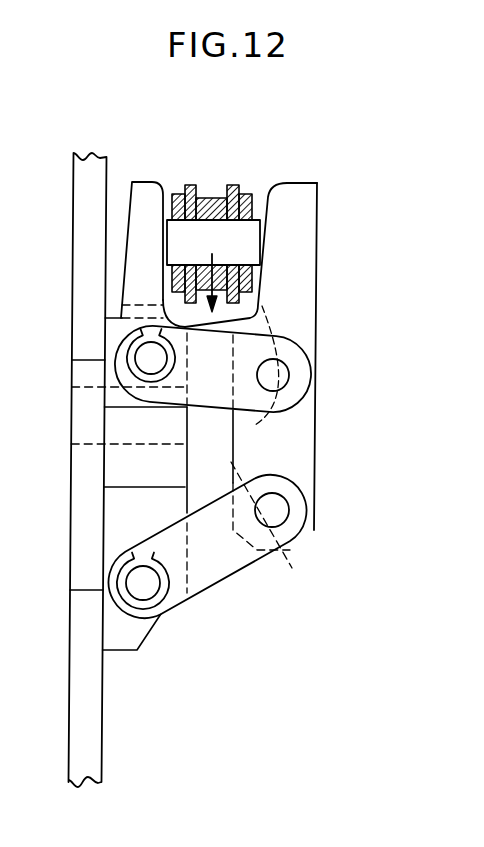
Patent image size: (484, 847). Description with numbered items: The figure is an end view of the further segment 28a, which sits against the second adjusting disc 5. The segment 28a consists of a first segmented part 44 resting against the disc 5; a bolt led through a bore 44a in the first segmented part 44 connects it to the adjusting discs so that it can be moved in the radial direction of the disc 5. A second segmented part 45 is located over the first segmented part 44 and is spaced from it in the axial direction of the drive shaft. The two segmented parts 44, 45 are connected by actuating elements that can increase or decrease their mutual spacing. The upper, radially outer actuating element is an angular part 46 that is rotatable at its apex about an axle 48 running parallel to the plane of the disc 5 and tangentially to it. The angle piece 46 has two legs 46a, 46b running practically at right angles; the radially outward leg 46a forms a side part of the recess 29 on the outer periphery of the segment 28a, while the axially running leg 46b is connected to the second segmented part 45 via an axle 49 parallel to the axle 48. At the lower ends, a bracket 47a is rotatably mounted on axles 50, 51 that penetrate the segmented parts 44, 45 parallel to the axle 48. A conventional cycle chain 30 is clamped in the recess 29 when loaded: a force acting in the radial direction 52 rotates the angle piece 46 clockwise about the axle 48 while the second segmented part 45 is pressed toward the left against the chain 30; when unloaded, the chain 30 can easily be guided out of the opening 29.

The second adjusting disc 5 is at (73, 198).
The further segment 28a is at (314, 463).
The recess 29 is at (255, 185).
The cycle chain 30 is at (202, 237).
The first segmented part 44 is at (72, 500).
The bore 44a is at (76, 400).
The second segmented part 45 is at (302, 327).
The angular part 46 is at (207, 413).
The leg 46a is at (142, 196).
The leg 46b is at (277, 407).
The bracket 47a is at (233, 582).
The axle 48 is at (160, 358).
The axle 49 is at (283, 369).
The axle 50 is at (148, 591).
The axle 51 is at (283, 516).
The radial direction 52 is at (212, 254).